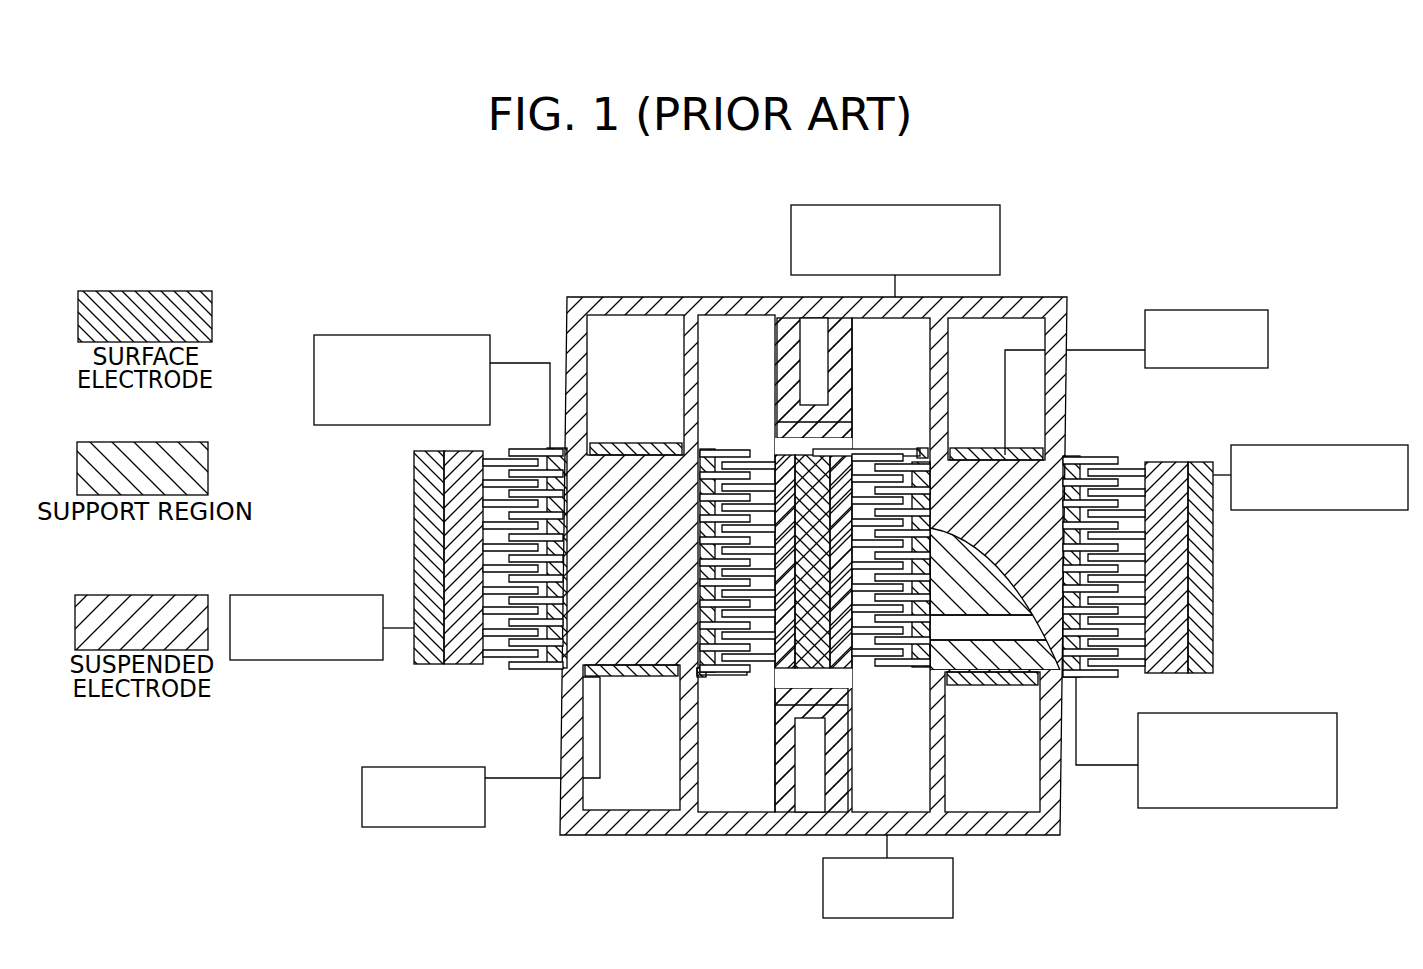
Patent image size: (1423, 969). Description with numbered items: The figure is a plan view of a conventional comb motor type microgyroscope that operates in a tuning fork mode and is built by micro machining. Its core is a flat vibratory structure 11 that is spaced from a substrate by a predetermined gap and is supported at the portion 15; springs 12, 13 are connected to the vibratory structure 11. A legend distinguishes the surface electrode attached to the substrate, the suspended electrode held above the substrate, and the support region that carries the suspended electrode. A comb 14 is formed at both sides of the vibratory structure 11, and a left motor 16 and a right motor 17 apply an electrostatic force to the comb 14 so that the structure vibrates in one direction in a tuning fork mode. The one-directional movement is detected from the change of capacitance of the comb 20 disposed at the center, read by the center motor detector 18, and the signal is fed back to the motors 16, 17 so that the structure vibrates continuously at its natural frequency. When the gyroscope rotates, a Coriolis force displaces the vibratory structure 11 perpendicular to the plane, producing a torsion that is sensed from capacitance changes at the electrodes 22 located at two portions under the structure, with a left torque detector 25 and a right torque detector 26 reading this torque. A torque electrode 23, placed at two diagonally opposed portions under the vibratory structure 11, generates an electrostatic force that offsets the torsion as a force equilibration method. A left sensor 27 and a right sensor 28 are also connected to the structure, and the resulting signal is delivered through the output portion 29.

The vibratory structure 11 is at (655, 465).
The spring 12 is at (830, 345).
The spring 13 is at (685, 797).
The comb 14 is at (530, 452).
The support portion 15 is at (838, 430).
The left motor 16 is at (308, 595).
The right motor 17 is at (1305, 444).
The center motor detector 18 is at (1003, 241).
The comb 20 is at (757, 662).
The electrode 22 is at (922, 449).
The torque electrode 23 is at (592, 452).
The left torque detector 25 is at (314, 362).
The right torque detector 26 is at (1250, 713).
The left sensor 27 is at (362, 795).
The right sensor 28 is at (1272, 327).
The output portion 29 is at (823, 886).